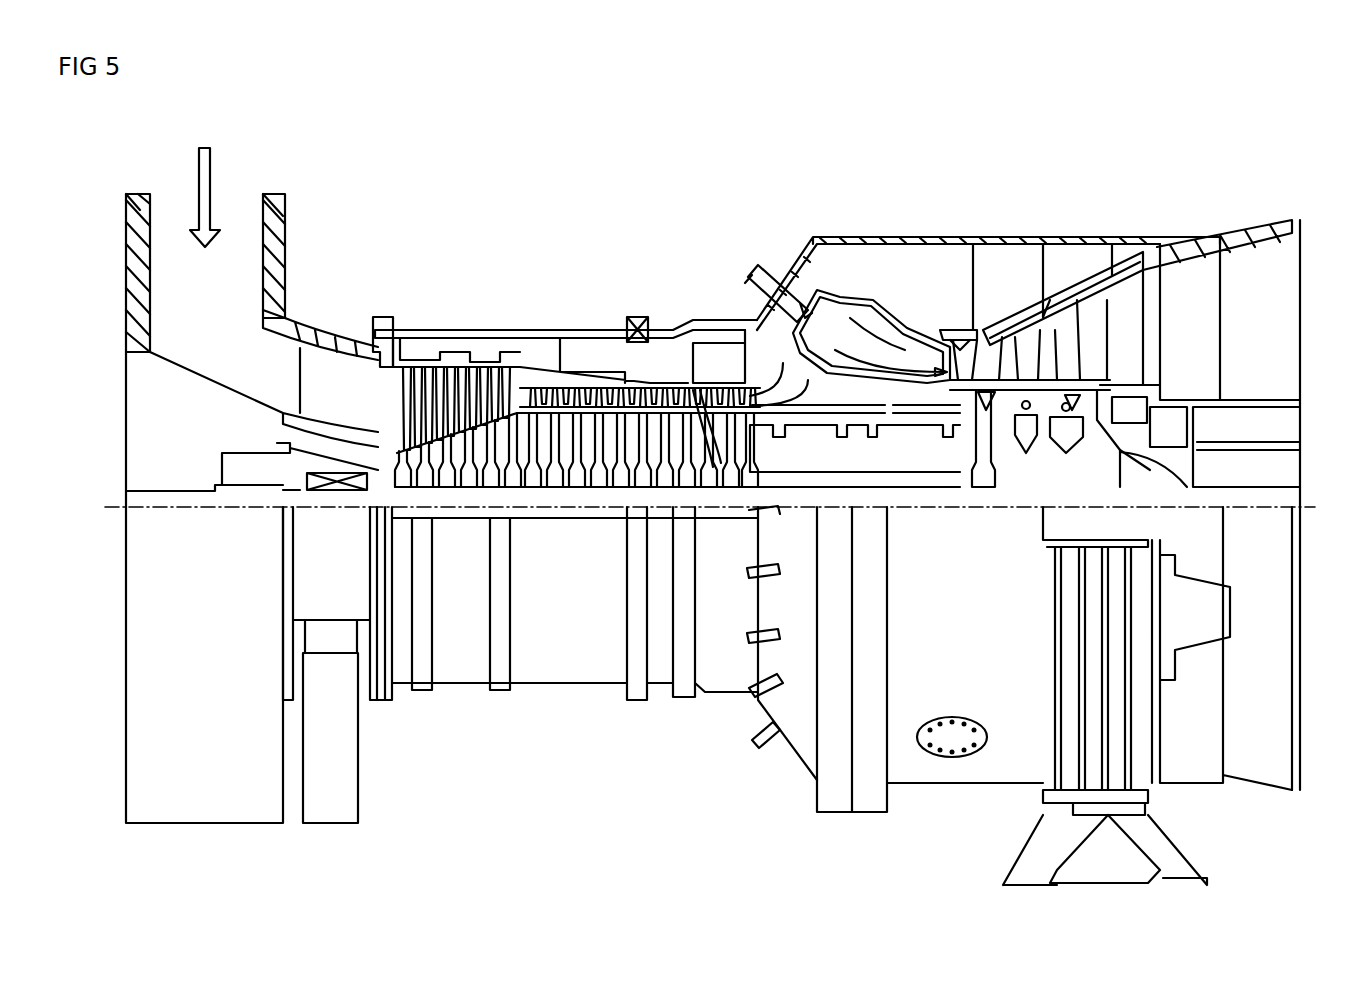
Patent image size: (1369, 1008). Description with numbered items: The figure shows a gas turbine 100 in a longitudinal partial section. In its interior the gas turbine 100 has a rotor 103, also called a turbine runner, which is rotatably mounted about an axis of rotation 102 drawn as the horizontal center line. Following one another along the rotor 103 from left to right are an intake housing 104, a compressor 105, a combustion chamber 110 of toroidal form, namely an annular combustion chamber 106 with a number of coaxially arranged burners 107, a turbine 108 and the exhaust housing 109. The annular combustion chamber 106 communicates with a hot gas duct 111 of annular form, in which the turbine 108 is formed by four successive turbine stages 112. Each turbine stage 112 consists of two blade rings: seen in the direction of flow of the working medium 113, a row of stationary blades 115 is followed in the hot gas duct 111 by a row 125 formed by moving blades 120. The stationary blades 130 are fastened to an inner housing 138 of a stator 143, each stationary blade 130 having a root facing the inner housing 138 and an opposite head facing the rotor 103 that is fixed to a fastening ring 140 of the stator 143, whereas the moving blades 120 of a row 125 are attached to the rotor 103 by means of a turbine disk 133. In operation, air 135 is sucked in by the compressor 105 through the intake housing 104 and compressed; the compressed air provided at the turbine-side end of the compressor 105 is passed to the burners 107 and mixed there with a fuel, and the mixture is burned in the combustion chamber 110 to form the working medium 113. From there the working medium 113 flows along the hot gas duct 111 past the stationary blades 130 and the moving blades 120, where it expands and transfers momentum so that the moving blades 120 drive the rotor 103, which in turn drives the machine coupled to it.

The gas turbine 100 is at (553, 200).
The axis of rotation 102 is at (110, 505).
The rotor 103 is at (773, 472).
The intake housing 104 is at (275, 258).
The compressor 105 is at (473, 310).
The annular combustion chamber 106 is at (922, 345).
The burners 107 is at (750, 268).
The turbine 108 is at (975, 200).
The exhaust housing 109 is at (1197, 258).
The combustion chamber 110 is at (845, 300).
The hot gas duct 111 is at (1123, 327).
The turbine stage 112 is at (1105, 200).
The working medium 113 is at (850, 312).
The row of stationary blades 115 is at (1067, 268).
The moving blades 120 is at (1030, 355).
The row of moving blades 125 is at (1127, 248).
The stationary blades 130 is at (1013, 350).
The turbine disk 133 is at (1097, 468).
The air 135 is at (233, 172).
The inner housing 138 is at (1007, 282).
The fastening ring 140 is at (947, 383).
The stator 143 is at (932, 250).